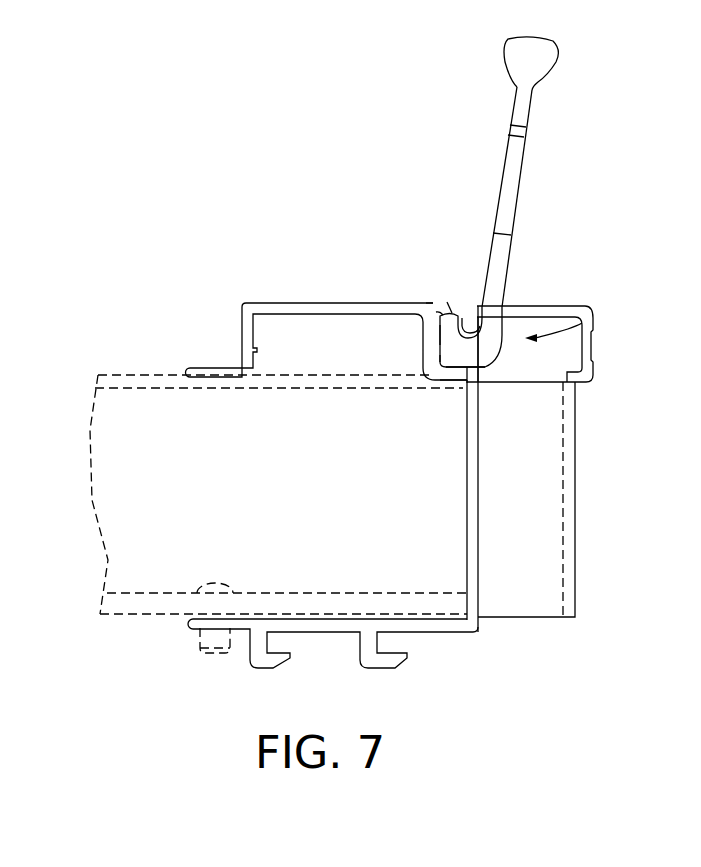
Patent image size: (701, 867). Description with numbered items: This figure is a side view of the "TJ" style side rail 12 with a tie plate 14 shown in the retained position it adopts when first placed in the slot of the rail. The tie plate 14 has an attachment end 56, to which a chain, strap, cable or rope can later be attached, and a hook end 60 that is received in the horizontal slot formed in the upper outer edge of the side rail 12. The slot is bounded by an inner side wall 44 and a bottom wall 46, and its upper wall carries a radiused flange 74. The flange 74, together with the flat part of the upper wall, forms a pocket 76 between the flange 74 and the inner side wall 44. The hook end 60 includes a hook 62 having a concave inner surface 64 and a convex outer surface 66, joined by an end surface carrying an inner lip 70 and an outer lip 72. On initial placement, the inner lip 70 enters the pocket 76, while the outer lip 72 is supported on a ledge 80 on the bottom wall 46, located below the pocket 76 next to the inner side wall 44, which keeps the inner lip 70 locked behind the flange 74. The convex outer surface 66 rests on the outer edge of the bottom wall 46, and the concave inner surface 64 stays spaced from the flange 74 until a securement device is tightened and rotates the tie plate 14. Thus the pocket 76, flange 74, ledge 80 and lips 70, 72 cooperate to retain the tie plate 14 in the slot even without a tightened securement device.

The side rail 12 is at (250, 303).
The tie plate 14 is at (527, 158).
The inner side wall 44 is at (437, 333).
The bottom wall 46 is at (467, 383).
The attachment end 56 is at (528, 92).
The hook end 60 is at (585, 315).
The hook 62 is at (453, 367).
The concave inner surface 64 is at (447, 300).
The convex outer surface 66 is at (490, 362).
The inner lip 70 is at (432, 308).
The outer lip 72 is at (440, 362).
The radiused flange 74 is at (461, 318).
The pocket 76 is at (432, 316).
The ledge 80 is at (455, 375).